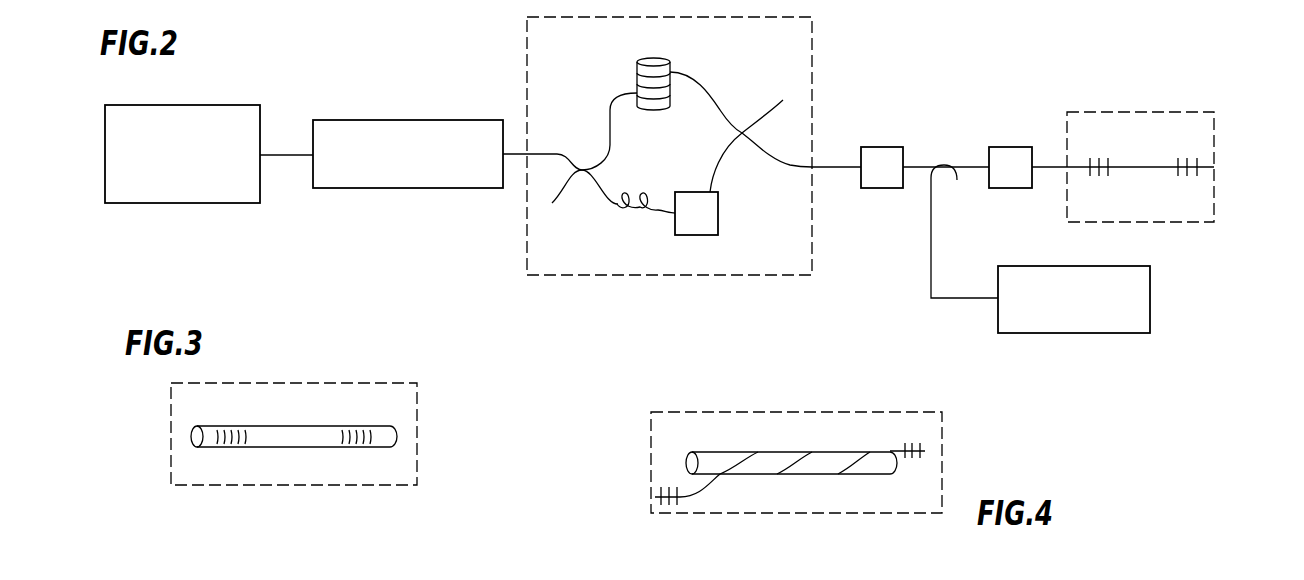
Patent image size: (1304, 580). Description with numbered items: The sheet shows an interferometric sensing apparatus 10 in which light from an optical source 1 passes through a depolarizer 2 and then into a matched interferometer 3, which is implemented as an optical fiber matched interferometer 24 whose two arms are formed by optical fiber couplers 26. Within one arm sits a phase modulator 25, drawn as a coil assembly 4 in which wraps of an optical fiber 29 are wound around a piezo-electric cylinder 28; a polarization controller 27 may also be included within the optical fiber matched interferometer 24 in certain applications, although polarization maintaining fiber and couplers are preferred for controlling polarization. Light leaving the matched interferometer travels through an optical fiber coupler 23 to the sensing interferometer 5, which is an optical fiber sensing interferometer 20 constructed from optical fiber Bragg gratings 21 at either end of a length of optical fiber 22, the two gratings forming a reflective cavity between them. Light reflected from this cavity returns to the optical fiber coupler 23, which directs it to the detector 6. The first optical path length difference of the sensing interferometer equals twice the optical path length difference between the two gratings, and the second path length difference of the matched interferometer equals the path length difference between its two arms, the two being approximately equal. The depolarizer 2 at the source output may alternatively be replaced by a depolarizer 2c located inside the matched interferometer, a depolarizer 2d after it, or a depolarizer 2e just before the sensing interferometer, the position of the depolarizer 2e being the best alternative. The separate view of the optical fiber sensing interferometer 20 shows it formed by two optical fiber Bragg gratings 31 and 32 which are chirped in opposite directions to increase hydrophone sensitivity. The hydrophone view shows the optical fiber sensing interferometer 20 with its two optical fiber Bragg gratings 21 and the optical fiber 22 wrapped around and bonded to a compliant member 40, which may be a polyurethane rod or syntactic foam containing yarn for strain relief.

In FIG. 2, the optical source 1 is at (197, 105).
In FIG. 2, the depolarizer 2 is at (395, 120).
In FIG. 2, the matched interferometer 3 is at (818, 40).
In FIG. 2, the fiber coil assembly 4 is at (655, 70).
In FIG. 2, the sensing interferometer 5 is at (1168, 161).
In FIG. 2, the detector 6 is at (1090, 333).
In FIG. 2, the optical fiber sensor system 10 is at (1124, 6).
In FIG. 2, the optical fiber sensing interferometer 20 is at (1150, 205).
In FIG. 3, the optical fiber sensing interferometer 20 is at (308, 400).
In FIG. 4, the optical fiber sensing interferometer 20 is at (683, 430).
In FIG. 2, the optical fiber Bragg gratings 21 is at (1099, 178).
In FIG. 4, the optical fiber Bragg gratings 21 is at (668, 508).
In FIG. 2, the optical fiber 22 is at (1134, 161).
In FIG. 4, the optical fiber 22 is at (815, 452).
In FIG. 2, the optical fiber coupler 23 is at (943, 167).
In FIG. 2, the optical fiber matched interferometer 24 is at (793, 72).
In FIG. 2, the phase modulator 25 is at (657, 58).
In FIG. 2, the optical fiber couplers 26 is at (585, 178).
In FIG. 2, the polarization controller 27 is at (635, 226).
In FIG. 2, the piezo-electric cylinder 28 is at (663, 103).
In FIG. 2, the optical fiber 29 is at (651, 104).
In FIG. 2, the depolarizer 2c is at (712, 235).
In FIG. 2, the depolarizer 2d is at (887, 188).
In FIG. 2, the depolarizer 2e is at (1022, 188).
In FIG. 3, the optical fiber Bragg grating 31 is at (235, 428).
In FIG. 3, the optical fiber Bragg grating 32 is at (370, 428).
In FIG. 4, the compliant member 40 is at (817, 479).